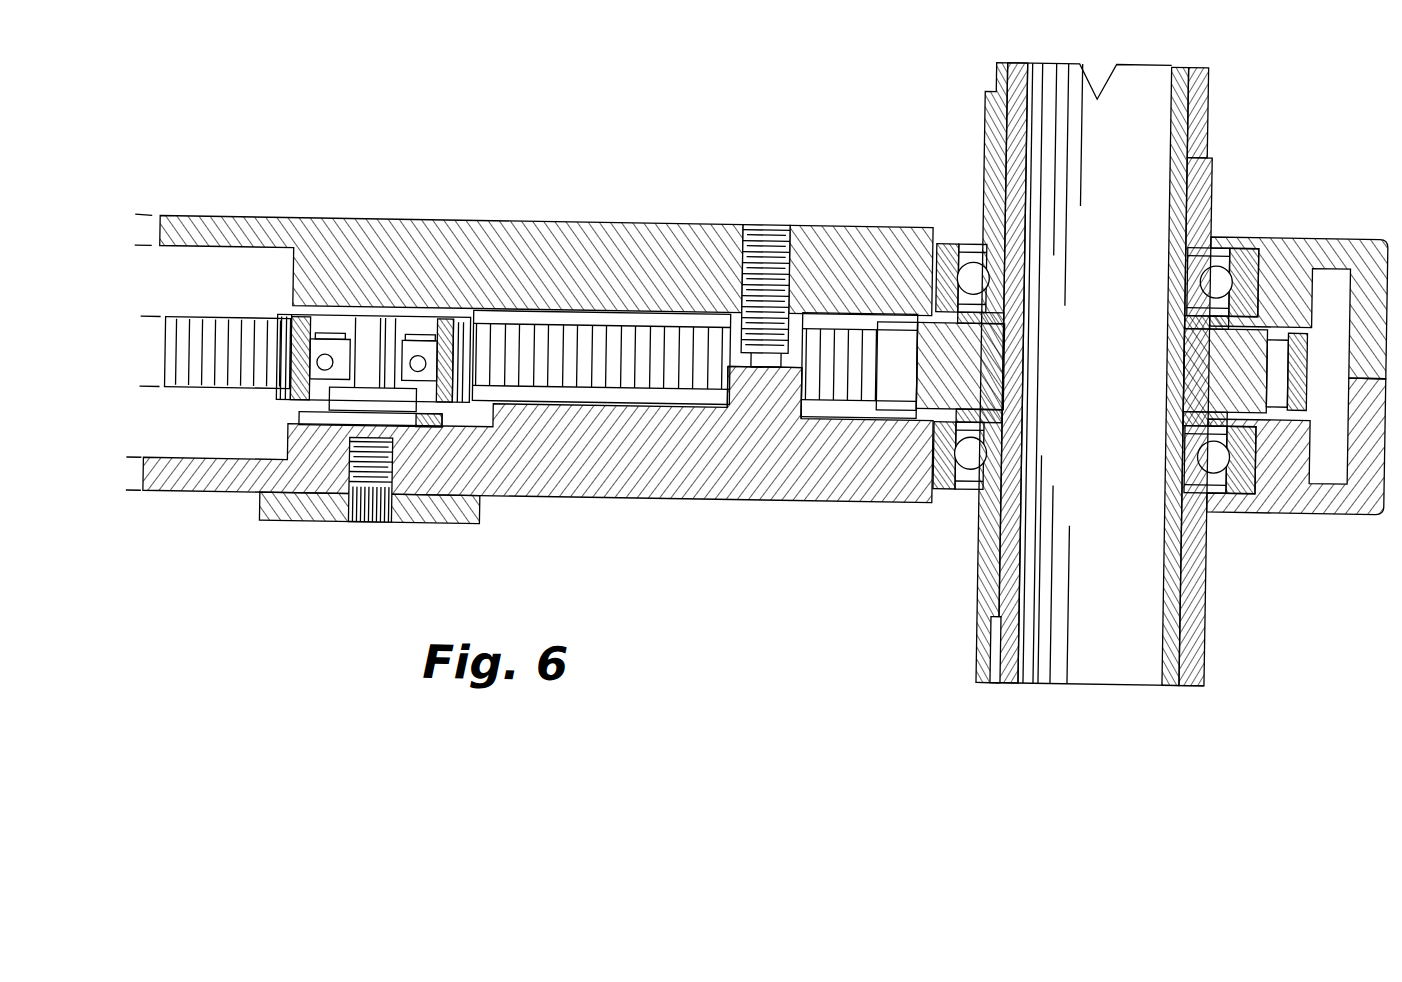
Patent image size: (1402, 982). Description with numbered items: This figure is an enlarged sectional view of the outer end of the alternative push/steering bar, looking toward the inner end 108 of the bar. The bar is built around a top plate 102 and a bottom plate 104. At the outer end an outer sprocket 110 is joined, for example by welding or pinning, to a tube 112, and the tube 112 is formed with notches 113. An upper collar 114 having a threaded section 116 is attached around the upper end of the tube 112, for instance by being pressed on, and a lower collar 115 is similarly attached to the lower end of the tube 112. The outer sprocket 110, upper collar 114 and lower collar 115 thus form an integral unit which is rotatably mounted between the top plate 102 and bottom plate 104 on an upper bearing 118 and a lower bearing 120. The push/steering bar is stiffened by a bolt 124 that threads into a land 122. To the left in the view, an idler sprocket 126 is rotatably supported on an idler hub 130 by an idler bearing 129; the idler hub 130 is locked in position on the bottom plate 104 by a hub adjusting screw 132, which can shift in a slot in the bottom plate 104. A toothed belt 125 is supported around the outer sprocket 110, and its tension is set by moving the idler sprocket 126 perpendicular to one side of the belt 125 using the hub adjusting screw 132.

The top plate 102 is at (245, 232).
The bottom plate 104 is at (196, 498).
The inner end 108 is at (1306, 131).
The outer sprocket 110 is at (926, 377).
The tube 112 is at (1019, 600).
The notches 113 is at (1098, 72).
The upper collar 114 is at (1210, 171).
The lower collar 115 is at (1189, 597).
The threaded section 116 is at (1214, 119).
The upper bearing 118 is at (946, 238).
The lower bearing 120 is at (945, 483).
The land 122 is at (767, 371).
The bolt 124 is at (760, 239).
The toothed belt 125 is at (222, 332).
The idler sprocket 126 is at (460, 324).
The idler bearing 129 is at (375, 345).
The idler hub 130 is at (298, 424).
The hub adjusting screw 132 is at (362, 515).